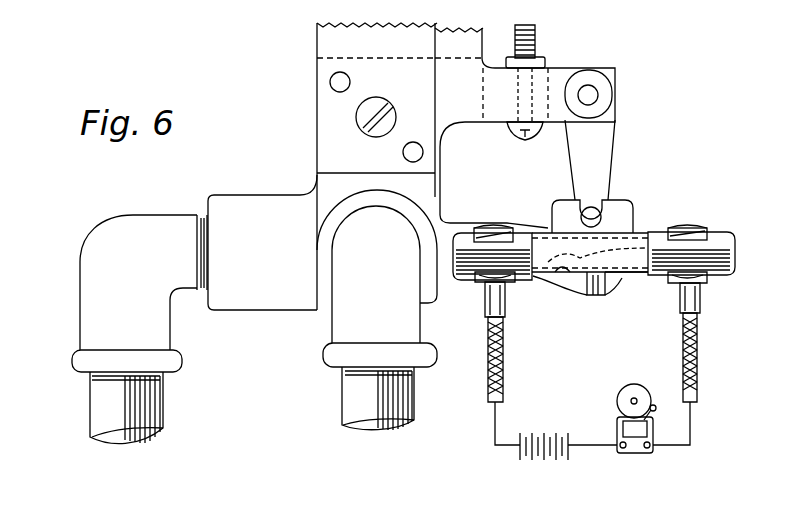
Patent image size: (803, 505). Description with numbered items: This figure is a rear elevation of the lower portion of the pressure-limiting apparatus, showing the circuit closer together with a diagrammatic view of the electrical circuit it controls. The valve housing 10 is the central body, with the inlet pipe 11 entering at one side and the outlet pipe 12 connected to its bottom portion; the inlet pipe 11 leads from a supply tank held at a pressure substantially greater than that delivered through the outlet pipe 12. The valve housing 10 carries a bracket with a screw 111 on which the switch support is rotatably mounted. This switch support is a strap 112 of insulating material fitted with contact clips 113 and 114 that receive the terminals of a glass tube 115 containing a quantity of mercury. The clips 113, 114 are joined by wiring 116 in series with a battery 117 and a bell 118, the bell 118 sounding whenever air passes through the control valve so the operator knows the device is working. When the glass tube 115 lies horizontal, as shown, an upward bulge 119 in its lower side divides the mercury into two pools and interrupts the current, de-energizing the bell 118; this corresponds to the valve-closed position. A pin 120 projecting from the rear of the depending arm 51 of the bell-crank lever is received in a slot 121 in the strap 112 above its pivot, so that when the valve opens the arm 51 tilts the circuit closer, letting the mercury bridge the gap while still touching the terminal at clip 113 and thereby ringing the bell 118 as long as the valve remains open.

The valve housing 10 is at (347, 186).
The inlet pipe 11 is at (143, 408).
The outlet pipe 12 is at (360, 397).
The depending arm 51 is at (598, 146).
The screw 111 is at (605, 290).
The strap 112 is at (620, 218).
The contact clip 113 is at (690, 233).
The contact clip 114 is at (493, 240).
The glass tube 115 is at (628, 275).
The wiring 116 is at (697, 354).
The battery 117 is at (552, 460).
The bell 118 is at (637, 454).
The upward bulge 119 is at (563, 272).
The pin 120 is at (596, 223).
The slot 121 is at (591, 217).